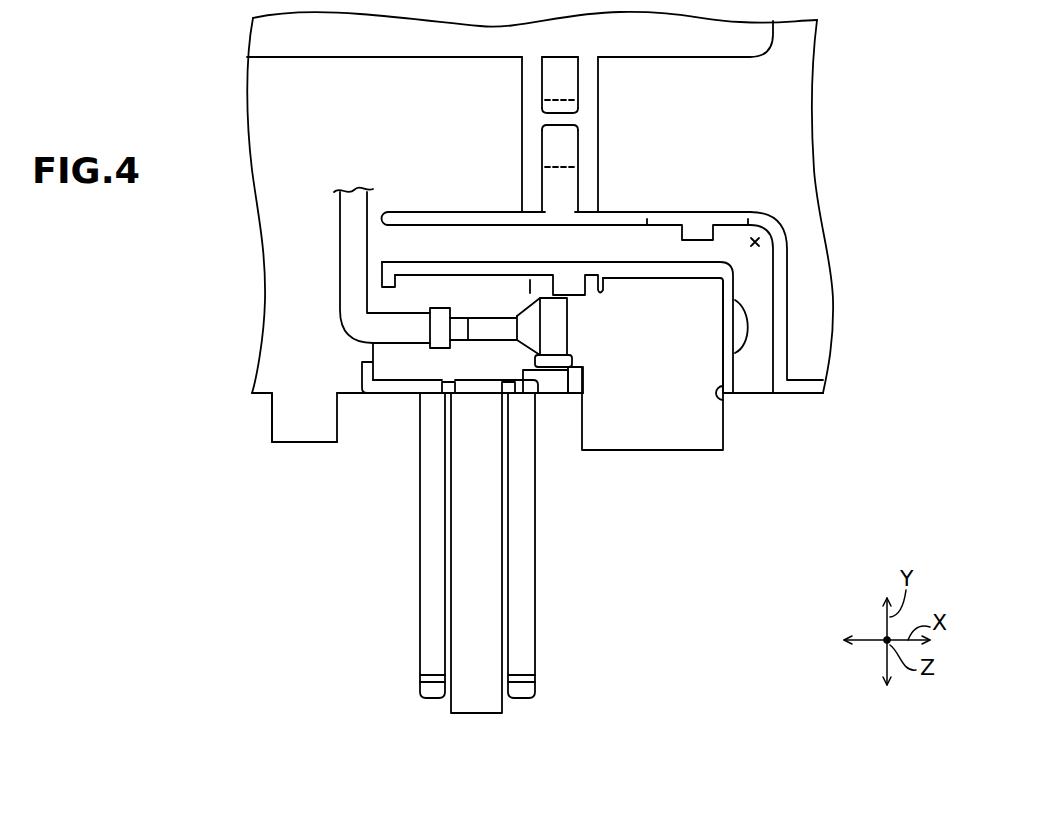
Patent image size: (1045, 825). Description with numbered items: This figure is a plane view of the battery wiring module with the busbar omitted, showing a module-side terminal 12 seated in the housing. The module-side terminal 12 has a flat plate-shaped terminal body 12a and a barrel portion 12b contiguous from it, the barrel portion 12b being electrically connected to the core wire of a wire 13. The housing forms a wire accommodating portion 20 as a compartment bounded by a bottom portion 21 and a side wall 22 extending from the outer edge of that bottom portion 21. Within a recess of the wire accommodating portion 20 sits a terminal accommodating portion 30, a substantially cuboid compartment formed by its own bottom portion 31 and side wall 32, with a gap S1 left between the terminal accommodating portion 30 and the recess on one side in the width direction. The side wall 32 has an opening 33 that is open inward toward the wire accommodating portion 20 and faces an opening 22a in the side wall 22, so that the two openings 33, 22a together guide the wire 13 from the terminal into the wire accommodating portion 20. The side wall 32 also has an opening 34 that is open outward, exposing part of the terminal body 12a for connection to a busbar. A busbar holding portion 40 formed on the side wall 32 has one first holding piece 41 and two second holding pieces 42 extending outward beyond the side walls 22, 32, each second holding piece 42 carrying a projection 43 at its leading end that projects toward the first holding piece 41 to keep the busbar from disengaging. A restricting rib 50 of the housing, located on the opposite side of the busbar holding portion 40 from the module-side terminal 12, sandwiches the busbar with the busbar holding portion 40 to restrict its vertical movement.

The module-side terminal 12 is at (662, 288).
The terminal body 12a is at (718, 430).
The barrel portion 12b is at (498, 322).
The wire 13 is at (338, 205).
The wire accommodating portion 20 is at (800, 50).
The bottom portion 21 is at (795, 78).
The side wall 22 is at (790, 304).
The opening 22a is at (380, 218).
The terminal accommodating portion 30 is at (560, 262).
The bottom portion 31 is at (508, 352).
The side wall 32 is at (626, 258).
The opening 33 is at (380, 270).
The opening 34 is at (724, 398).
The busbar holding portion 40 is at (479, 568).
The first holding piece 41 is at (467, 710).
The second holding piece 42 is at (426, 655).
The projection 43 is at (424, 677).
The restricting rib 50 is at (296, 448).
The gap S1 is at (757, 236).